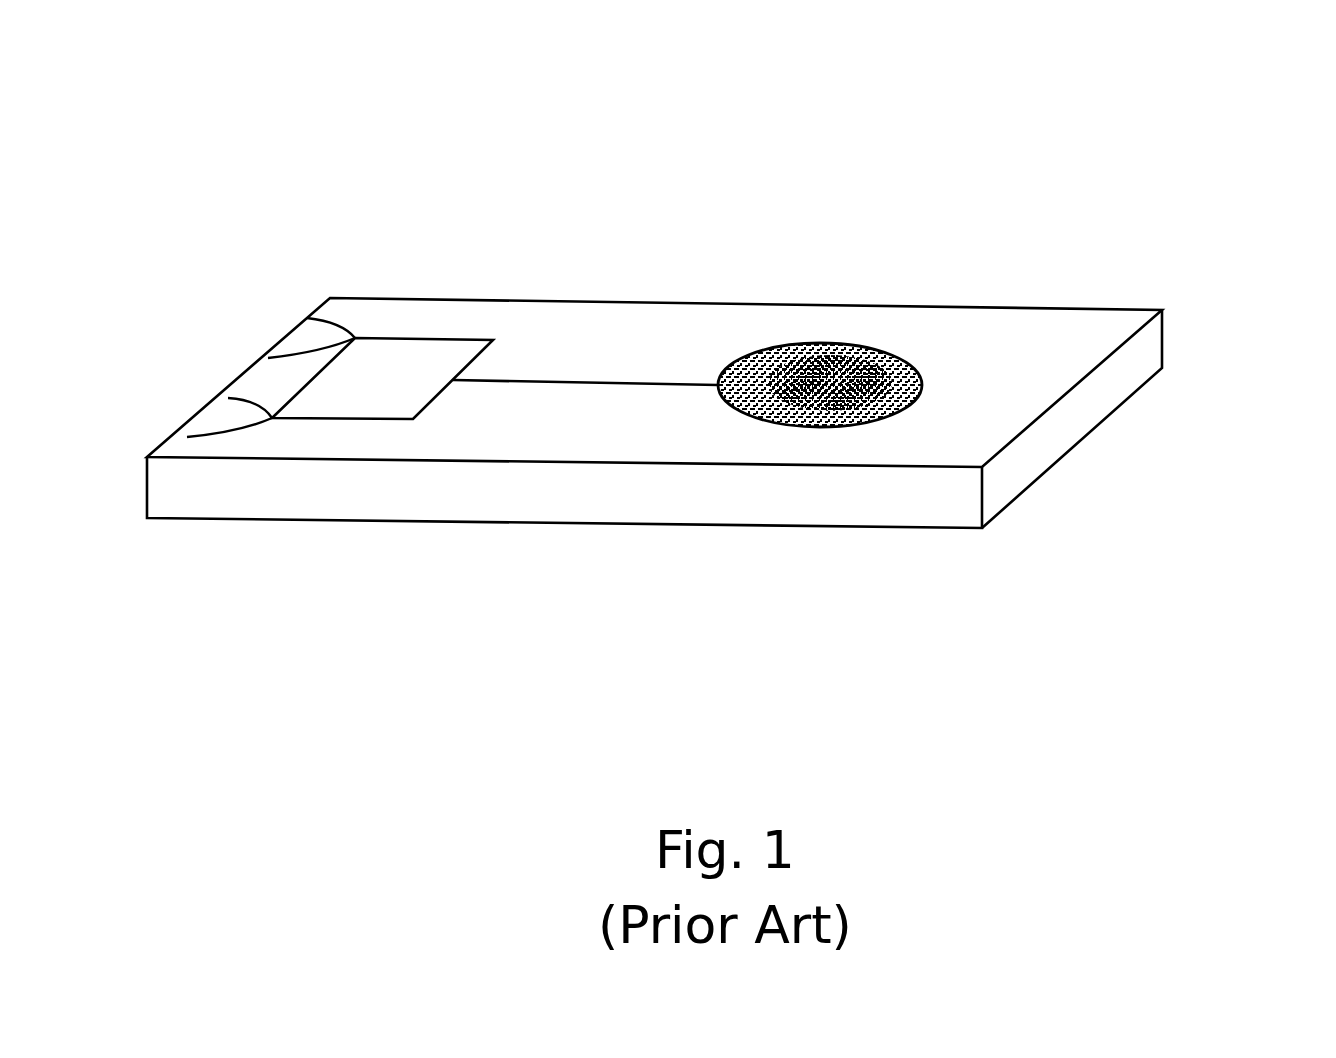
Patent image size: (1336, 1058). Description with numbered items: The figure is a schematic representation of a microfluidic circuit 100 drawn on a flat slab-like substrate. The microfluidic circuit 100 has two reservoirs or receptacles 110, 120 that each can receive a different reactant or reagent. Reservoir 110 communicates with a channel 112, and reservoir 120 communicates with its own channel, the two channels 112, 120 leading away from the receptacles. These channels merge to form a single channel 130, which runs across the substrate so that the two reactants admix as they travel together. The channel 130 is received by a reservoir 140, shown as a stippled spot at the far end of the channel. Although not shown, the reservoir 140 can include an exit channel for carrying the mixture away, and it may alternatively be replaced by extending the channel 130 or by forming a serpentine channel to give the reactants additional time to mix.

The microfluidic circuit 100 is at (1163, 368).
The reservoir 110 is at (307, 337).
The channel 112 is at (415, 338).
The reservoir 120 is at (207, 415).
The channel 130 is at (615, 382).
The reservoir 140 is at (840, 350).